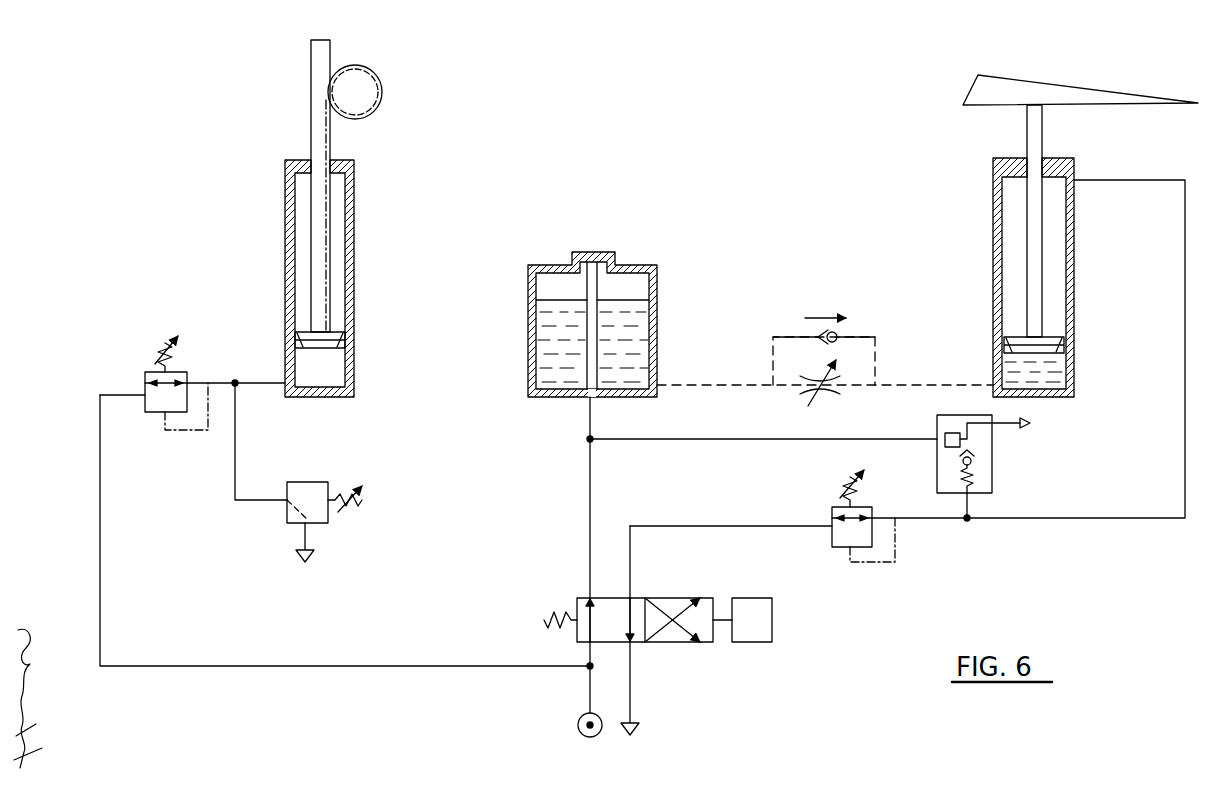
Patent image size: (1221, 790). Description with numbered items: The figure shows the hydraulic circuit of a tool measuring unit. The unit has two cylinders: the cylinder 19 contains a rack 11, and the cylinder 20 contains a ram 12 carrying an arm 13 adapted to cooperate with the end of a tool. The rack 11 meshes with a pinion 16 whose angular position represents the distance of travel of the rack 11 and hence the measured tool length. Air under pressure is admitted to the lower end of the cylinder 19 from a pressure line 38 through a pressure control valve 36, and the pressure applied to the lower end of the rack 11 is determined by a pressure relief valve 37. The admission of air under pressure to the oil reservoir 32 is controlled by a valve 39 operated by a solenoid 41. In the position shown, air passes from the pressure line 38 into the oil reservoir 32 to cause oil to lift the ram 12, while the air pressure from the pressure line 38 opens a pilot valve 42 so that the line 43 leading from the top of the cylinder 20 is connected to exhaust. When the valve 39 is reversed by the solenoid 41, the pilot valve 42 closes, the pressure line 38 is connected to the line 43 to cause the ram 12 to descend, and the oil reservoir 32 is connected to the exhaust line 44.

The rack 11 is at (318, 140).
The ram 12 is at (1026, 132).
The arm 13 is at (1152, 100).
The pinion 16 is at (378, 92).
The cylinder 19 is at (288, 292).
The cylinder 20 is at (993, 278).
The oil reservoir 32 is at (530, 305).
The pressure control valve 36 is at (190, 383).
The pressure relief valve 37 is at (338, 472).
The pressure line 38 is at (588, 684).
The valve 39 is at (643, 598).
The solenoid 41 is at (773, 618).
The pilot valve 42 is at (946, 436).
The line 43 is at (1185, 448).
The exhaust line 44 is at (632, 682).